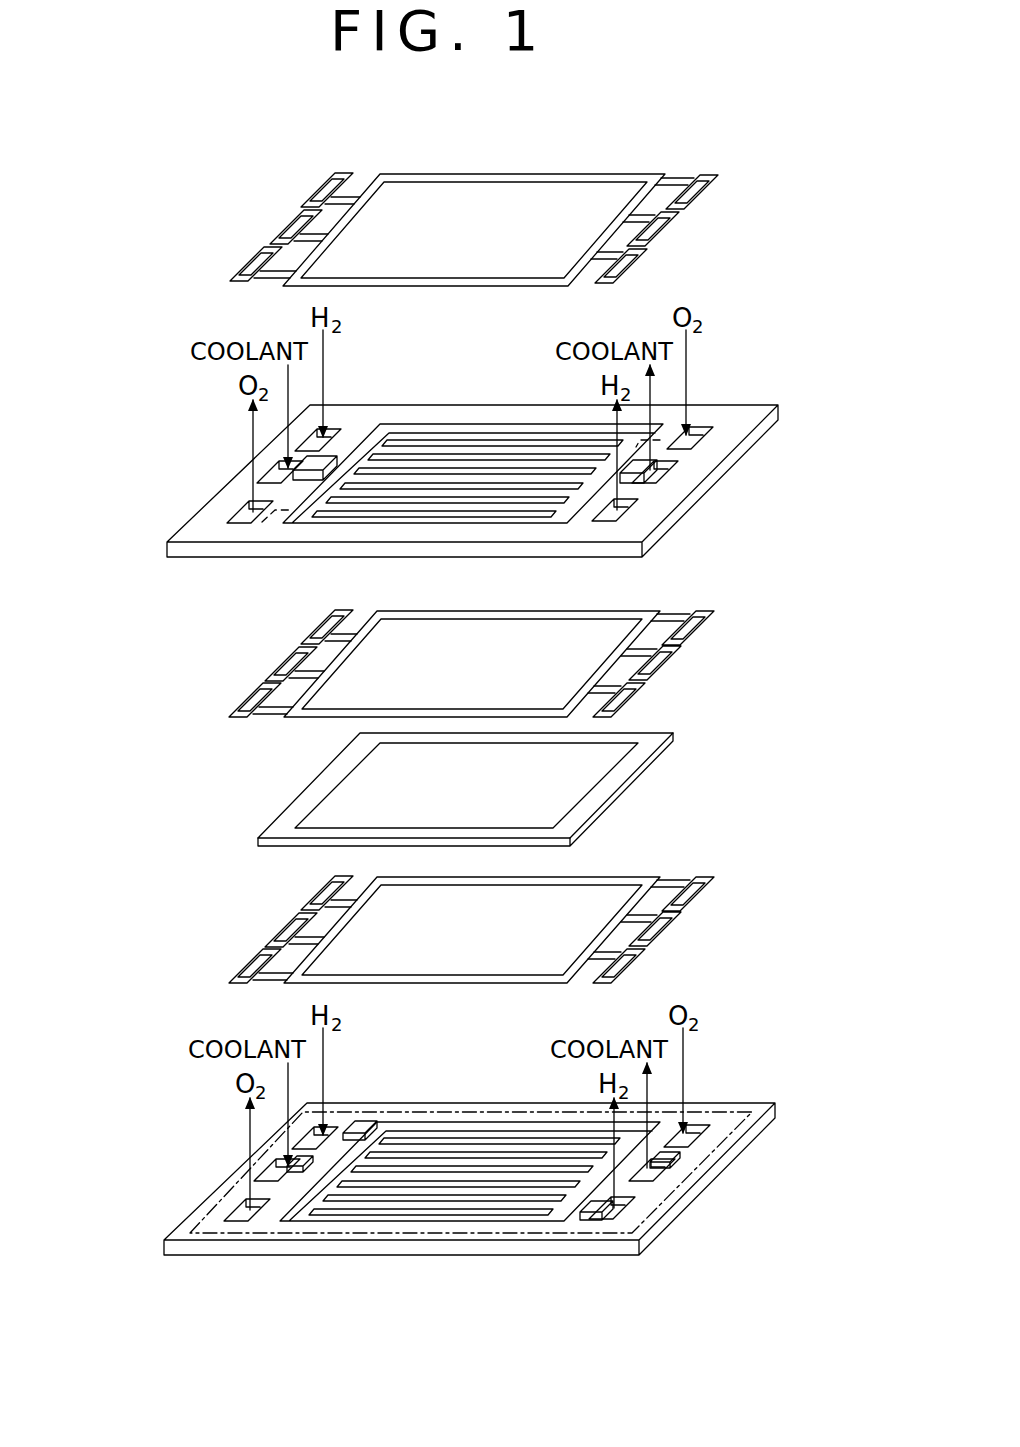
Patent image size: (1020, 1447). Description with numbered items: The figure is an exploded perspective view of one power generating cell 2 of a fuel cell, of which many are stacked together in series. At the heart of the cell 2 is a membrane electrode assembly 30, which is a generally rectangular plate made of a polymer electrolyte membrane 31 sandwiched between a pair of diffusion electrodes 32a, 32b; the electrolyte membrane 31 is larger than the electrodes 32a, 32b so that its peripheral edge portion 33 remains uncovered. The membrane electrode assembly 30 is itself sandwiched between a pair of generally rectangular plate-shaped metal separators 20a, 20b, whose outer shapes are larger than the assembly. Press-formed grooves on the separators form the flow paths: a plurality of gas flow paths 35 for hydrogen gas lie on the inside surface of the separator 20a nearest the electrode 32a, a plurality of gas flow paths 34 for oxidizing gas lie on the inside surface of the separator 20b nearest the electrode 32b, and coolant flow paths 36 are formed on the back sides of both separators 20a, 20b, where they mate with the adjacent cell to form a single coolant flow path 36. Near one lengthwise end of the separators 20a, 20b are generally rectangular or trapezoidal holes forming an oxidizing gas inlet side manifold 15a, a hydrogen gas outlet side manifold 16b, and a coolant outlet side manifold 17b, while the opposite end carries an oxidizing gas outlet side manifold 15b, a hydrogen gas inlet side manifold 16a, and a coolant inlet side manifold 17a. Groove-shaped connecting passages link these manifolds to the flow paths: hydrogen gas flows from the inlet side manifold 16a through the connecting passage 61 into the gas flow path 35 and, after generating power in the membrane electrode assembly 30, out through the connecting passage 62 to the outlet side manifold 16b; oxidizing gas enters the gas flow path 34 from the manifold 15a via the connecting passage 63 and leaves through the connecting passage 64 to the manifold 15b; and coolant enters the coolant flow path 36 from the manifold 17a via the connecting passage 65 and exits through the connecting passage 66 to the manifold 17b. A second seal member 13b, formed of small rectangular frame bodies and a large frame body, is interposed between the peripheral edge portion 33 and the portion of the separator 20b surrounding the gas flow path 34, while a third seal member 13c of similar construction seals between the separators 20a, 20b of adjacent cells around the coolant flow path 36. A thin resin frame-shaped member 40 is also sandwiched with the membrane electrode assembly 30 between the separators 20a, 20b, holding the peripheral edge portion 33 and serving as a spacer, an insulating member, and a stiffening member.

The cell 2 is at (862, 389).
The second seal member 13b is at (240, 648).
The third seal member 13c is at (256, 189).
The oxidizing gas inlet side manifold 15a is at (232, 518).
The oxidizing gas outlet side manifold 15b is at (693, 449).
The hydrogen gas inlet side manifold 16a is at (620, 521).
The hydrogen gas outlet side manifold 16b is at (302, 446).
The coolant inlet side manifold 17a is at (653, 484).
The coolant outlet side manifold 17b is at (265, 484).
The separator 20a is at (160, 1240).
The separator 20b is at (164, 551).
The membrane electrode assembly 30 is at (399, 803).
The electrolyte membrane 31 is at (280, 825).
The anode side diffusion electrode 32a is at (290, 845).
The cathode side diffusion electrode 32b is at (300, 805).
The peripheral edge portion 33 is at (627, 767).
The gas flow path for oxidizing gas 34 is at (300, 560).
The gas flow path for hydrogen gas 35 is at (463, 1187).
The coolant flow path 36 is at (505, 458).
The frame-shaped member 40 is at (352, 1233).
The inlet side connecting passage 61 is at (585, 1222).
The outlet side connecting passage 62 is at (352, 1130).
The inlet side connecting passage 63 is at (262, 522).
The outlet side connecting passage 64 is at (660, 440).
The inlet side connecting passage 65 is at (633, 478).
The outlet side connecting passage 66 is at (338, 461).